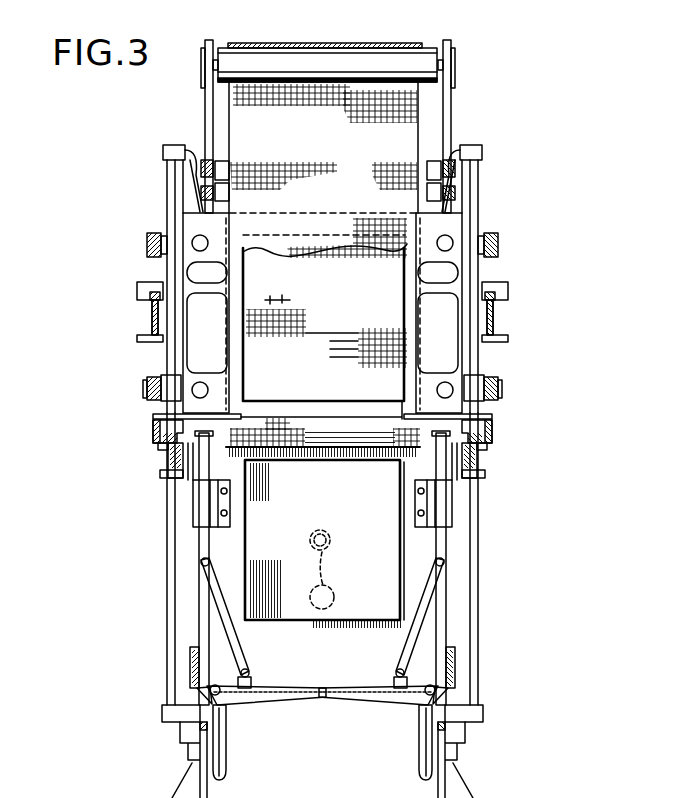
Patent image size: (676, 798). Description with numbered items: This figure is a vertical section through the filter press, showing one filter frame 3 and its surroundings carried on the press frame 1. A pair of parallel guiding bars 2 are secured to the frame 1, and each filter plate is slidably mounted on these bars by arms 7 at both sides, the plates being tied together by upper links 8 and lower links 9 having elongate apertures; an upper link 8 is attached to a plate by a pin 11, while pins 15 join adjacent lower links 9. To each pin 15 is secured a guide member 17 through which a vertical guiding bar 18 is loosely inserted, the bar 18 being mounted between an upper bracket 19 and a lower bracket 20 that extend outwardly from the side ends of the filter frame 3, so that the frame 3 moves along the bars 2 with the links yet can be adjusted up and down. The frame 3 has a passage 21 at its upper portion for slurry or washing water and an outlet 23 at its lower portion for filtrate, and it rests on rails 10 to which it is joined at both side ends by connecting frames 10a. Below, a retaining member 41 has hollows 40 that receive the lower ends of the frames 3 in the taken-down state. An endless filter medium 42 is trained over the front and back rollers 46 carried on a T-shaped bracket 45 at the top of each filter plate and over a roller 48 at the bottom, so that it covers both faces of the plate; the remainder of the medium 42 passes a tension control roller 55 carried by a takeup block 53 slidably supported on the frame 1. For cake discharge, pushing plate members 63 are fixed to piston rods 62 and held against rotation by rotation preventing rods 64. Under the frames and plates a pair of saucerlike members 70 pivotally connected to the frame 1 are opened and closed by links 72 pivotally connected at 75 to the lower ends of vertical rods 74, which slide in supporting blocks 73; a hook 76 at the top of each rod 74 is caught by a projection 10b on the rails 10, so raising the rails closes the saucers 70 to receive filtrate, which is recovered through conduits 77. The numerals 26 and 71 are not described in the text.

The press frame 1 is at (440, 783).
The guiding bars 2 is at (150, 318).
The filter frame 3 is at (275, 410).
The arms 7 is at (137, 285).
The upper links 8 is at (160, 235).
The lower links 9 is at (147, 380).
The rails 10 is at (166, 468).
The connecting frames 10a is at (157, 446).
The projection 10b is at (168, 478).
The pin 11 is at (148, 242).
The pins 15 is at (165, 400).
The guide member 17 is at (160, 380).
The guiding bar 18 is at (170, 173).
The upper brackets 19 is at (173, 146).
The lower brackets 20 is at (165, 413).
The passage 21 is at (207, 245).
The outlet 23 is at (203, 381).
The lower column 26 is at (167, 690).
The hollows 40 is at (185, 645).
The retaining member 41 is at (190, 670).
The filter medium 42 is at (252, 46).
The T-shaped bracket 45 is at (219, 165).
The front and back rollers 46 is at (420, 163).
The roller 48 is at (397, 427).
The takeup block 53 is at (408, 47).
The tension control roller 55 is at (453, 68).
The piston rods 62 is at (308, 535).
The pushing plate members 63 is at (368, 612).
The rotation preventing rods 64 is at (344, 578).
The saucerlike members 70 is at (240, 710).
The pivot block 71 is at (245, 677).
The links 72 is at (213, 600).
The supporting blocks 73 is at (230, 488).
The vertical rod 74 is at (205, 540).
The pivot connection 75 is at (205, 563).
The hook 76 is at (200, 413).
The conduits 77 is at (226, 760).